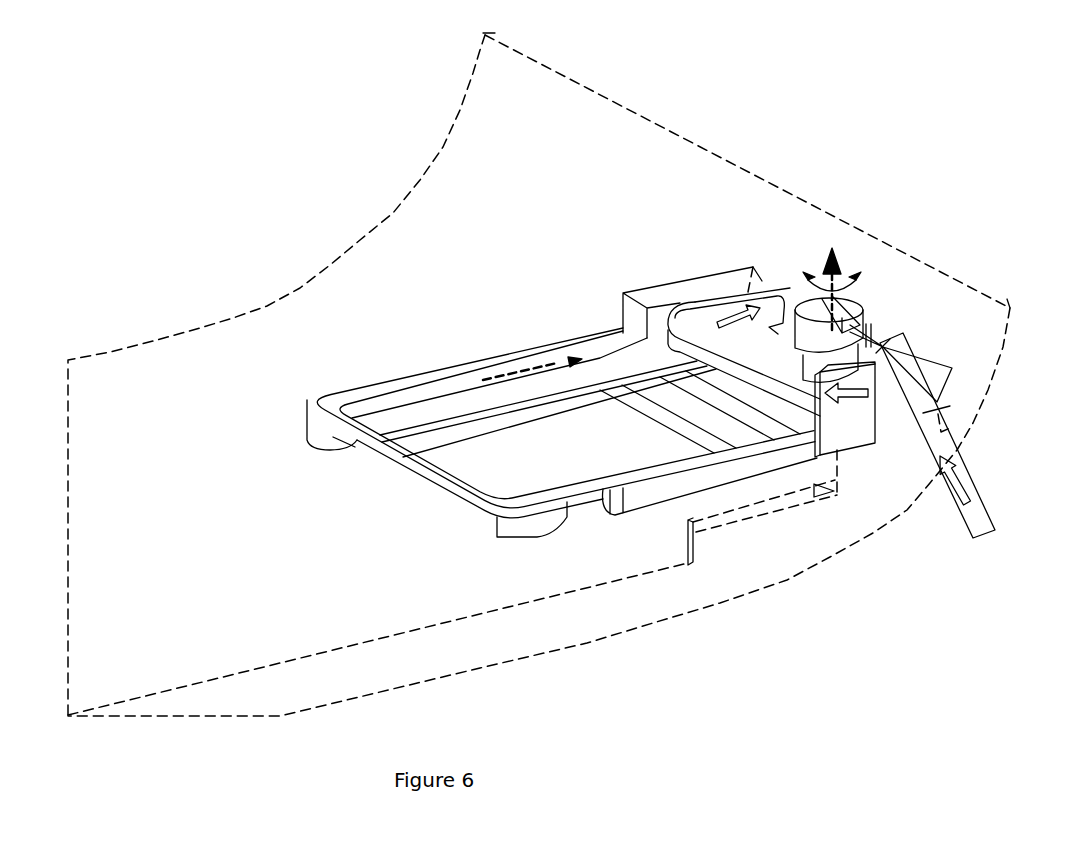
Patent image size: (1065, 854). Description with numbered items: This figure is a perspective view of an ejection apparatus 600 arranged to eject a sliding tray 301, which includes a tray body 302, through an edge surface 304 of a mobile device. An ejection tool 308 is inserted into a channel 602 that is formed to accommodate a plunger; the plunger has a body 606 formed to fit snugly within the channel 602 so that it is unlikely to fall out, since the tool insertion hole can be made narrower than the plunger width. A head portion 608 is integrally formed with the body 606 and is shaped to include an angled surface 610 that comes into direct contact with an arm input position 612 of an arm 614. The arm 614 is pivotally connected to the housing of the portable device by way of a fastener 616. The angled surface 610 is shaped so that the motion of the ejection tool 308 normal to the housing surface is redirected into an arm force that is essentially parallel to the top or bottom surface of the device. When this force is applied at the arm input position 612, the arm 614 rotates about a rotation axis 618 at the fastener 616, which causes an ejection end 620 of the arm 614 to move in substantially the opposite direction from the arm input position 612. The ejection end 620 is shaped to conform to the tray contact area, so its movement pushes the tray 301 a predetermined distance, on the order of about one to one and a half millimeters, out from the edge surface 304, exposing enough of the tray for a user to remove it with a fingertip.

The ejection apparatus 600 is at (916, 105).
The sliding tray 301 is at (490, 357).
The tray body 302 is at (407, 463).
The edge surface 304 is at (858, 225).
The ejection tool 308 is at (913, 418).
The channel 602 is at (923, 413).
The body 606 is at (898, 380).
The head portion 608 is at (883, 347).
The angled surface 610 is at (868, 357).
The arm input position 612 is at (830, 437).
The arm 614 is at (775, 352).
The fastener 616 is at (798, 307).
The rotation axis 618 is at (826, 252).
The ejection end 620 is at (765, 306).